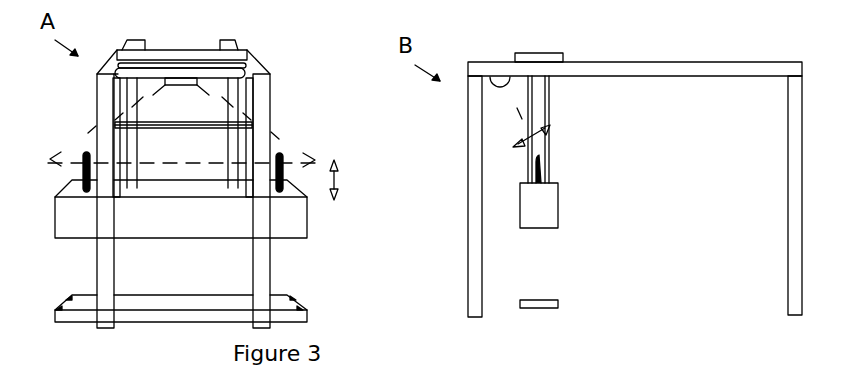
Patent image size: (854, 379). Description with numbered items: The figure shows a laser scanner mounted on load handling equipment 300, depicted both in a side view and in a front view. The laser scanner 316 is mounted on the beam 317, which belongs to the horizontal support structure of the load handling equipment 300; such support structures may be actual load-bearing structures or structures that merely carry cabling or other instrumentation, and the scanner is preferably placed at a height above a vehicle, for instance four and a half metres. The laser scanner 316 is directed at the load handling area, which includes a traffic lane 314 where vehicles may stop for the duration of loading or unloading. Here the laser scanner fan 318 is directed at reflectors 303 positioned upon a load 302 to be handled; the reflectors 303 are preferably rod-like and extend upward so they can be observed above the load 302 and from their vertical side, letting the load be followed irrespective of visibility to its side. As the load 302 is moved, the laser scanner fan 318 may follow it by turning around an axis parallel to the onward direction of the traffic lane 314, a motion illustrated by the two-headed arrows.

The load handling equipment 300 is at (470, 158).
The load 302 is at (578, 218).
The reflectors 303 is at (82, 152).
The traffic lane 314 is at (170, 292).
The laser scanner 316 is at (179, 78).
The beam 317 is at (148, 72).
The laser scanner fan 318 is at (278, 146).